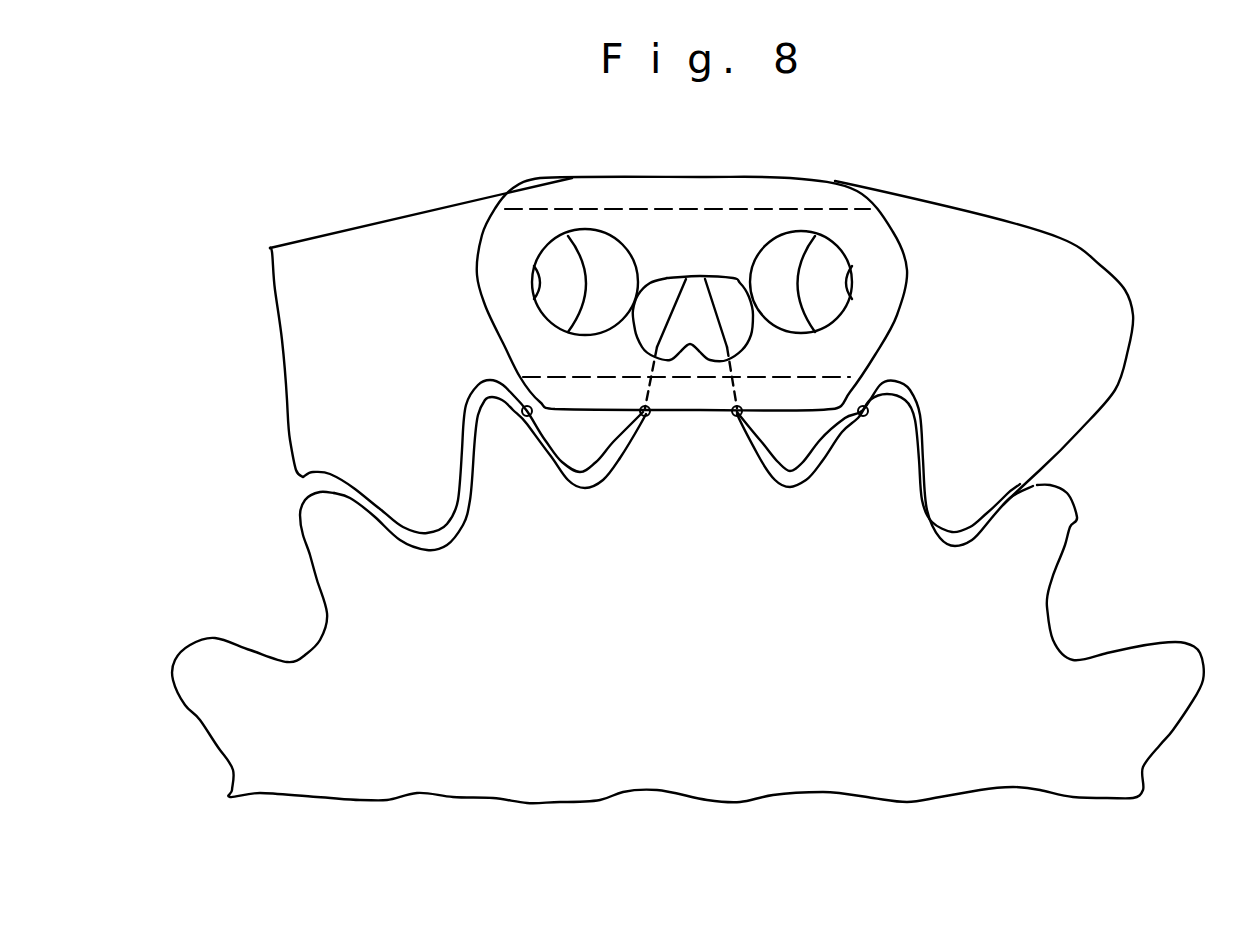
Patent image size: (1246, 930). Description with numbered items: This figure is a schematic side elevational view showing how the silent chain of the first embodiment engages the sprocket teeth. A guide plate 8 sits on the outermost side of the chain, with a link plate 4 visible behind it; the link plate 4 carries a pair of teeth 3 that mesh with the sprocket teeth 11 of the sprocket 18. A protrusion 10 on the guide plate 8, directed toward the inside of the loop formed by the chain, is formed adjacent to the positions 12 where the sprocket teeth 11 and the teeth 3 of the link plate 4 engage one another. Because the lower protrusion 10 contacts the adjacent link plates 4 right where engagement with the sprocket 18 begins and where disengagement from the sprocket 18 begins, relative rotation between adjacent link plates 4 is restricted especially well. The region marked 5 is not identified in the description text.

The teeth 3 is at (420, 503).
The link plate 4 is at (341, 245).
The mounting hole 5 is at (550, 257).
The guide plate 8 is at (707, 192).
The protrusion 10 is at (793, 393).
The sprocket teeth 11 is at (490, 423).
The positions 12 is at (531, 429).
The sprocket 18 is at (692, 775).